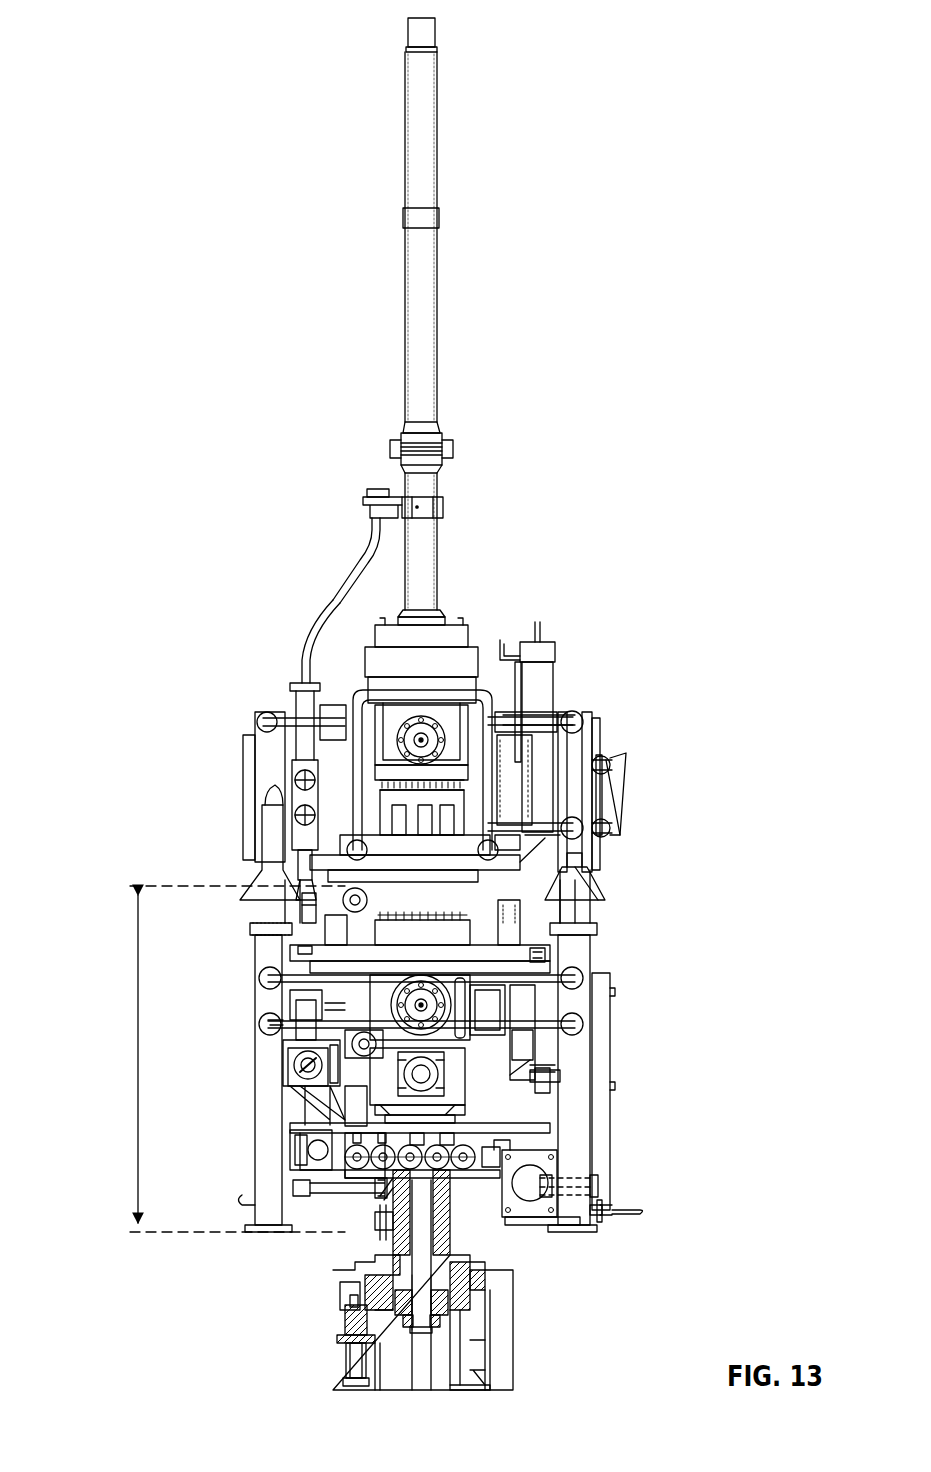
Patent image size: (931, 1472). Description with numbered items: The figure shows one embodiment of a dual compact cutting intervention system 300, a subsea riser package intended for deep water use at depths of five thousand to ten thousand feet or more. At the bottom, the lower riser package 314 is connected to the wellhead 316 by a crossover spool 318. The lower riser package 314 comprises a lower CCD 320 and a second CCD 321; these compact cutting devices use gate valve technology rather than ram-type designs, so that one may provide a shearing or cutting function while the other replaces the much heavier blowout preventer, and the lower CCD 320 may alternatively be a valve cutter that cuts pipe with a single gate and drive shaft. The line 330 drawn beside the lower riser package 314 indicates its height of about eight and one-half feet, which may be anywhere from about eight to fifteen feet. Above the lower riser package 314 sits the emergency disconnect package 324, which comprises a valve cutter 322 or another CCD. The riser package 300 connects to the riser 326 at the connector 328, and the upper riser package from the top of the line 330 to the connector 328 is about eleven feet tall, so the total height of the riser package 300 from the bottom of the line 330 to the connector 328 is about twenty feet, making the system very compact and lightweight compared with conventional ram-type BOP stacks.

The dual compact cutting intervention system 300 is at (255, 103).
The lower riser package 314 is at (457, 1056).
The wellhead 316 is at (536, 1307).
The crossover spool 318 is at (378, 1206).
The lower CCD 320 is at (400, 1000).
The CCD 321 is at (398, 1074).
The valve cutter 322 is at (421, 740).
The emergency disconnect package 324 is at (651, 775).
The riser 326 is at (438, 336).
The connector 328 is at (450, 438).
The line 330 is at (138, 1060).